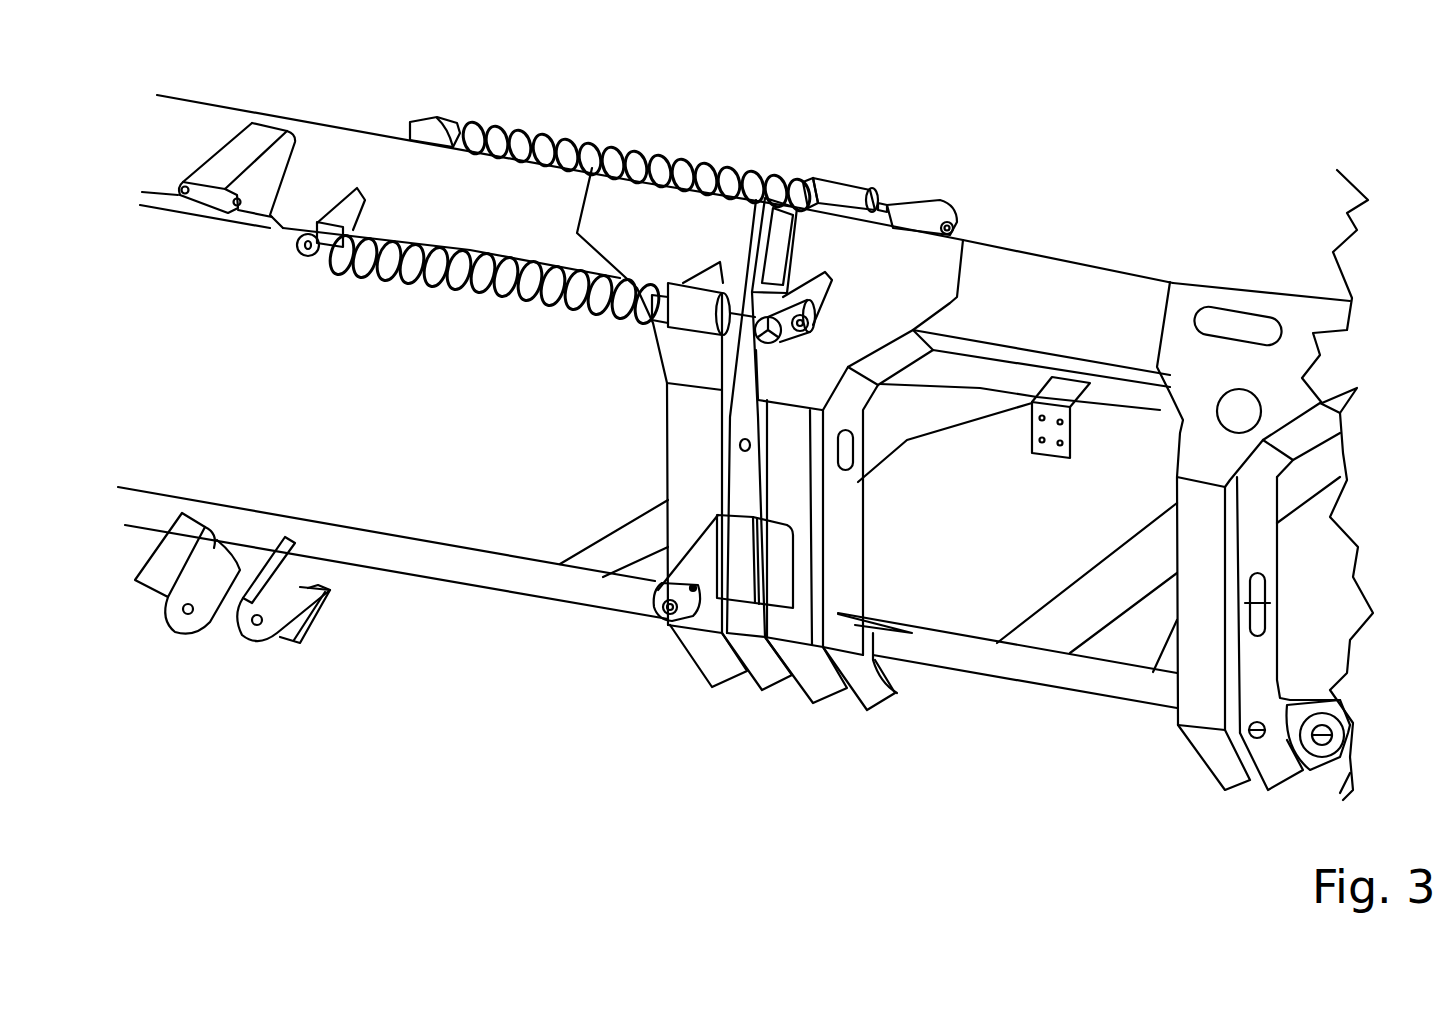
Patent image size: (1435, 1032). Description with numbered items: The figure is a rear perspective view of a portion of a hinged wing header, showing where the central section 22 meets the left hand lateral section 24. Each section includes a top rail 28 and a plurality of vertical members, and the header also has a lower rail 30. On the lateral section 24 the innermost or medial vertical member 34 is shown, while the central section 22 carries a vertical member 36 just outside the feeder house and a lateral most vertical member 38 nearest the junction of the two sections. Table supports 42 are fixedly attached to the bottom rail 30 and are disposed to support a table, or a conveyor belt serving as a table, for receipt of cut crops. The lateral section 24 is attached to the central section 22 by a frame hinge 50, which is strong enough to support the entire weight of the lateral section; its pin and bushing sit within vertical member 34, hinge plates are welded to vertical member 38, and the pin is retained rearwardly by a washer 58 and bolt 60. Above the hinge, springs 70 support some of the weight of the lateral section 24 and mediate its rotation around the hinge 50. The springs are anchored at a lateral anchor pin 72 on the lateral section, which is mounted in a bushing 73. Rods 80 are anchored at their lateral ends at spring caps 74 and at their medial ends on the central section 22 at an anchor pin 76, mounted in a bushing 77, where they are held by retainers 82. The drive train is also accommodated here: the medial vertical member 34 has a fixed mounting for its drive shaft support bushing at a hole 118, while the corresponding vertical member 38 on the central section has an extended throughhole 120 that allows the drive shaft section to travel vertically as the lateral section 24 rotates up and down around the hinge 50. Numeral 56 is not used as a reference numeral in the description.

The central section 22 is at (1270, 247).
The left hand lateral section 24 is at (556, 118).
The top rail 28 is at (190, 125).
The lower rail 30 is at (455, 572).
The medial vertical member 34 is at (727, 667).
The vertical member 36 is at (1270, 770).
The lateral most vertical member 38 is at (873, 687).
The table supports 42 is at (603, 532).
The frame hinge 50 is at (785, 748).
The center strip tab 56 is at (773, 583).
The washer 58 is at (685, 600).
The bolt 60 is at (657, 613).
The springs 70 is at (650, 157).
The lateral anchor pin 72 is at (447, 120).
The bushing 73 is at (423, 135).
The spring caps 74 is at (832, 200).
The anchor pin 76 is at (927, 197).
The bushing 77 is at (907, 213).
The rods 80 is at (737, 313).
The retainers 82 is at (773, 293).
The hole 118 is at (740, 445).
The extended throughhole 120 is at (847, 447).